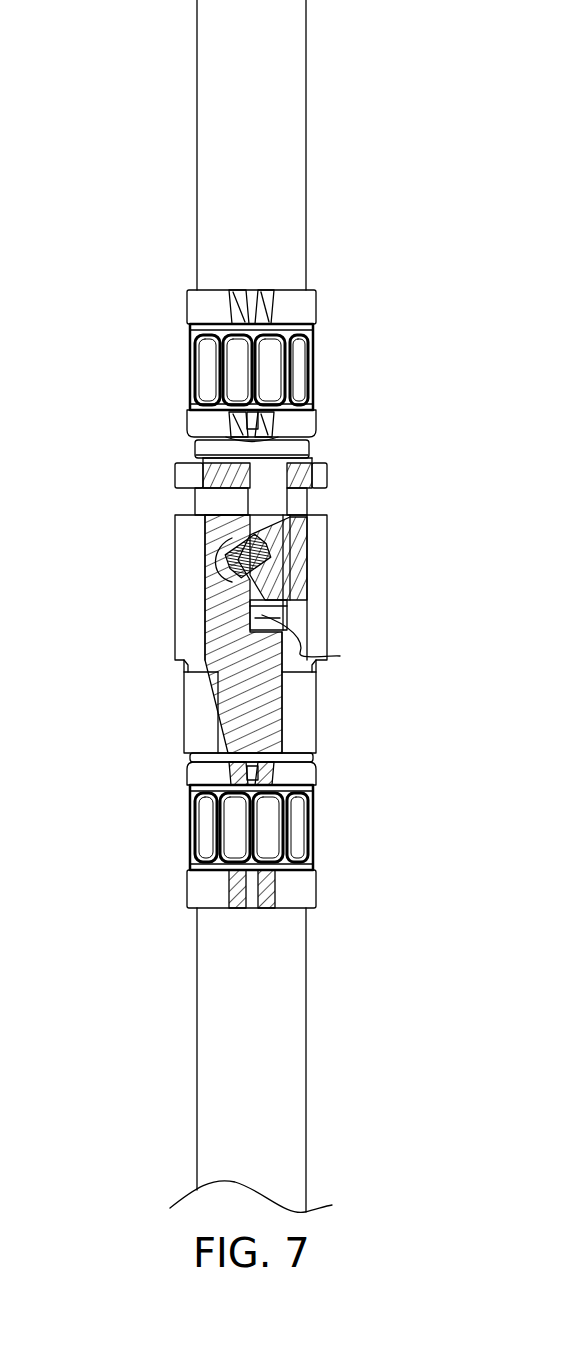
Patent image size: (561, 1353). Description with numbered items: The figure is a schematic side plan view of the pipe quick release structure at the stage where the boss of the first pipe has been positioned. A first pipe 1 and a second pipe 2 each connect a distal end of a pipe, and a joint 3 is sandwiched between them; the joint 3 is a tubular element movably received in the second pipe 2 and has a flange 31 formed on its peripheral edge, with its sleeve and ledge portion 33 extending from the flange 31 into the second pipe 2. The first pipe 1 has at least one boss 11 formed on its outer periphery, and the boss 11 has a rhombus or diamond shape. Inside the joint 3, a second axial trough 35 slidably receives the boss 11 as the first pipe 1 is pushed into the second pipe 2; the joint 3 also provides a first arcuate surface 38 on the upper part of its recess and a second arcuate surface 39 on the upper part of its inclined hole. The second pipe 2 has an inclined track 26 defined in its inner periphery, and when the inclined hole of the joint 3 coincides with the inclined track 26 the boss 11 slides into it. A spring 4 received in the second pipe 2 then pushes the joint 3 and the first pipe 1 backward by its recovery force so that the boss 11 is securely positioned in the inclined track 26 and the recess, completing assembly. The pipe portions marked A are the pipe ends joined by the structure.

The first pipe 1 is at (203, 452).
The second pipe 2 is at (205, 717).
The joint 3 is at (297, 502).
The spring 4 is at (300, 653).
The boss 11 is at (235, 548).
The inclined track 26 is at (222, 568).
The flange 31 is at (322, 475).
The insert 33 is at (262, 615).
The second axial trough 35 is at (260, 497).
The first arcuate surface 38 is at (285, 548).
The second arcuate surface 39 is at (282, 572).
The tube A is at (283, 241).